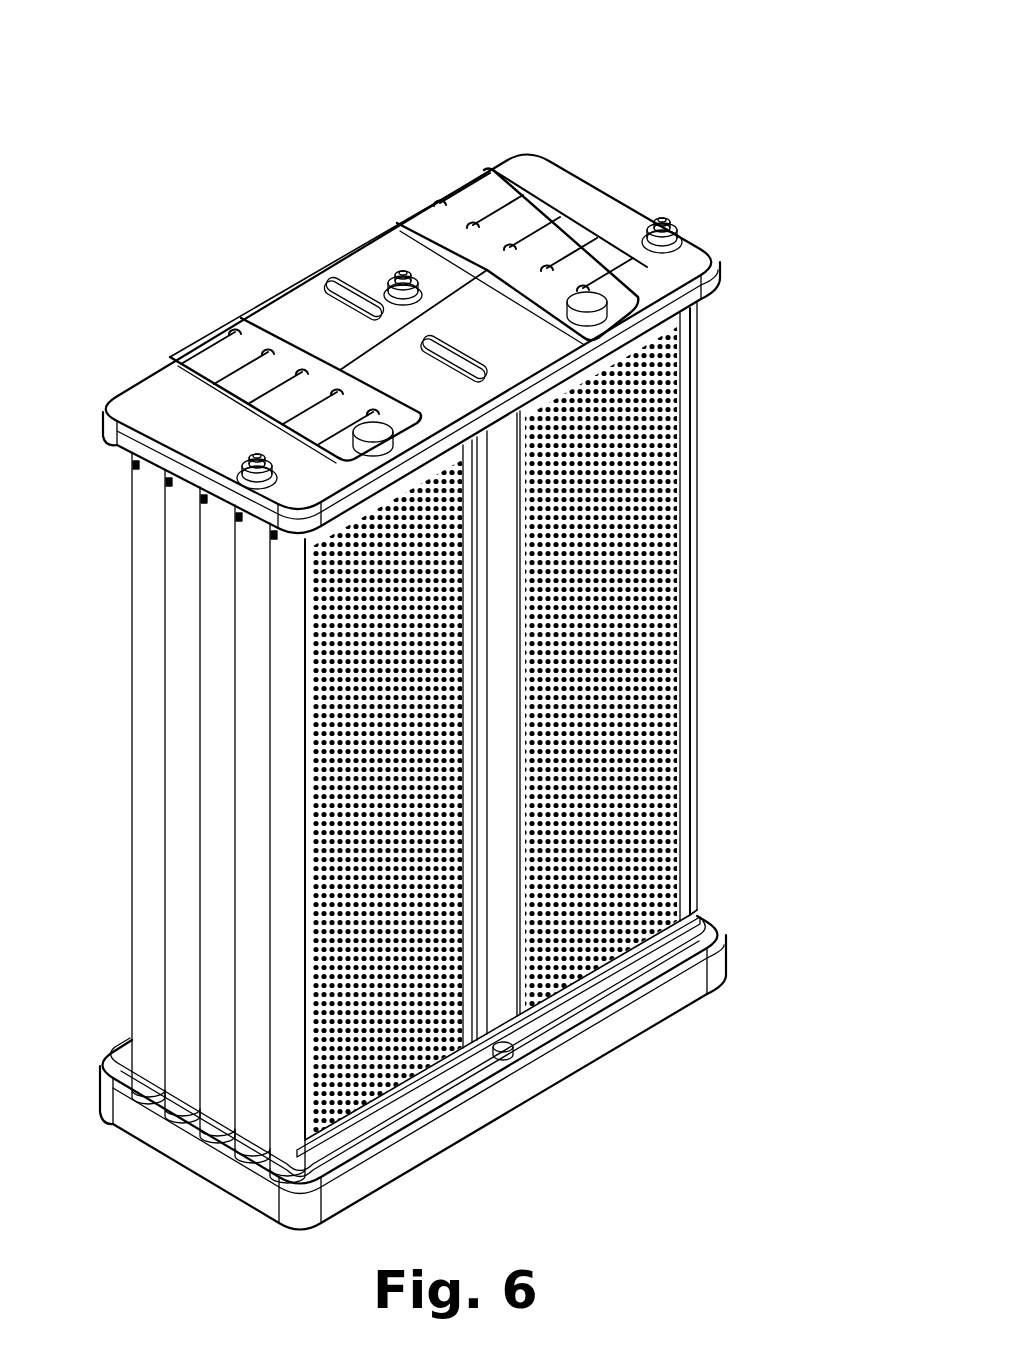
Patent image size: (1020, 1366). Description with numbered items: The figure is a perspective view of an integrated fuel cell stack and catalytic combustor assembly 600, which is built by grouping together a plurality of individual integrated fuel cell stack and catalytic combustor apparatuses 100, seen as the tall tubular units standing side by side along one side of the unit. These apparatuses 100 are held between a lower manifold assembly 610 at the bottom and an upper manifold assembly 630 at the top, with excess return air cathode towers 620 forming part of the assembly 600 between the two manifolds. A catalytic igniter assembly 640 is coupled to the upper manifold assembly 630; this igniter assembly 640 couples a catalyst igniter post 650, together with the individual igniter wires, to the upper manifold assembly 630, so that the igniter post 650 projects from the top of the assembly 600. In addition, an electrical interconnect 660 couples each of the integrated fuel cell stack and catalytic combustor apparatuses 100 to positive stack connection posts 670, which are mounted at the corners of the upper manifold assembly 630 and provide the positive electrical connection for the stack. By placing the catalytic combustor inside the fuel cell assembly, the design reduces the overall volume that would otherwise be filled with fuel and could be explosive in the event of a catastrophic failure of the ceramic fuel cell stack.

The integrated fuel cell stack and catalytic combustor assembly 600 is at (590, 78).
The lower manifold assembly 610 is at (138, 1150).
The excess return air cathode towers 620 is at (528, 1048).
The upper manifold assembly 630 is at (720, 312).
The catalytic igniter assembly 640 is at (340, 370).
The catalyst igniter post 650 is at (402, 278).
The electrical interconnect 660 is at (203, 510).
The positive stack connection posts 670 is at (666, 228).
The integrated fuel cell stack and catalytic combustor apparatus 100 is at (145, 762).